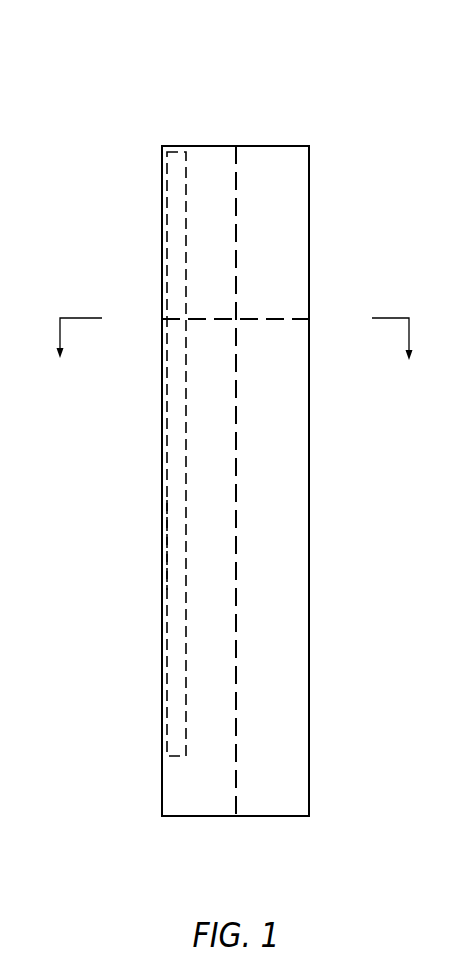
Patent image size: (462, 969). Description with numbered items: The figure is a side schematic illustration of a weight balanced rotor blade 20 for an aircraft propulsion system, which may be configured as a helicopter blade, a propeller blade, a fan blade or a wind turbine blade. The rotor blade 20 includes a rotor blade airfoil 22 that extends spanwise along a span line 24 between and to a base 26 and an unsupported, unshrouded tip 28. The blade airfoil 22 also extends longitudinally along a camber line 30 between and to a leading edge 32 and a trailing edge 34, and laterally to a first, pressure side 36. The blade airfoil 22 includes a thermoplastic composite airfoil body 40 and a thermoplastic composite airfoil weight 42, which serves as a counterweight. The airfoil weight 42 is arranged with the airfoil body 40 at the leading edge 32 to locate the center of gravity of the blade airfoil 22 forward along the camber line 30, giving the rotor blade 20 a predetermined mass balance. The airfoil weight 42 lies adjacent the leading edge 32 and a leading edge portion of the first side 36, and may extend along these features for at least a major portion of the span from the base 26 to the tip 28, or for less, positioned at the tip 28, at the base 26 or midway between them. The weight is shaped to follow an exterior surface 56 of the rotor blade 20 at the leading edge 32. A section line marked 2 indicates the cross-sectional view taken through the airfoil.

The rotor blade 20 is at (182, 422).
The rotor blade airfoil 22 is at (139, 96).
The span line 24 is at (237, 701).
The base 26 is at (281, 816).
The tip 28 is at (282, 146).
The camber line 30 is at (277, 315).
The leading edge 32 is at (162, 265).
The trailing edge 34 is at (309, 206).
The first side 36 is at (282, 529).
The thermoplastic composite airfoil body 40 is at (312, 440).
The thermoplastic composite airfoil weight 42 is at (163, 542).
The exterior surface 56 is at (177, 618).
The section line for FIG. 2 is at (236, 356).